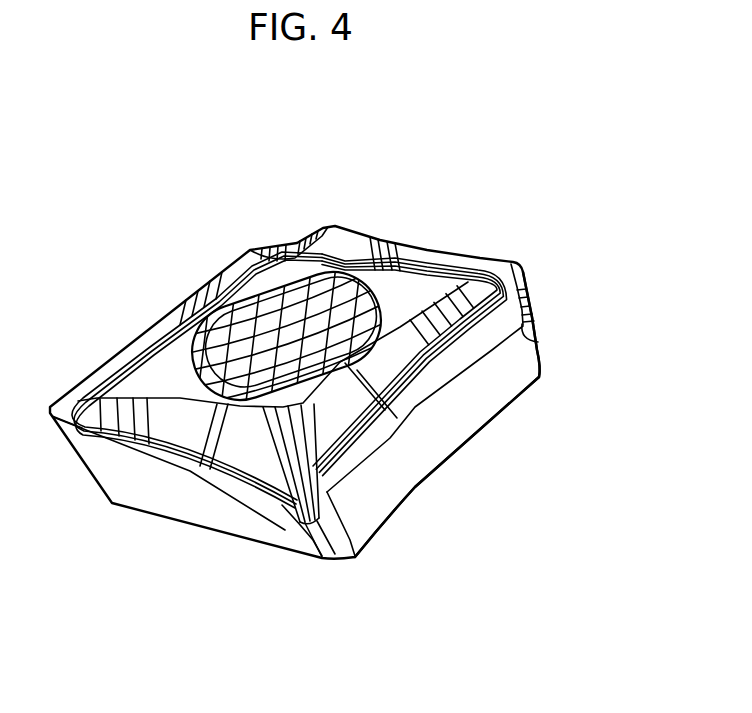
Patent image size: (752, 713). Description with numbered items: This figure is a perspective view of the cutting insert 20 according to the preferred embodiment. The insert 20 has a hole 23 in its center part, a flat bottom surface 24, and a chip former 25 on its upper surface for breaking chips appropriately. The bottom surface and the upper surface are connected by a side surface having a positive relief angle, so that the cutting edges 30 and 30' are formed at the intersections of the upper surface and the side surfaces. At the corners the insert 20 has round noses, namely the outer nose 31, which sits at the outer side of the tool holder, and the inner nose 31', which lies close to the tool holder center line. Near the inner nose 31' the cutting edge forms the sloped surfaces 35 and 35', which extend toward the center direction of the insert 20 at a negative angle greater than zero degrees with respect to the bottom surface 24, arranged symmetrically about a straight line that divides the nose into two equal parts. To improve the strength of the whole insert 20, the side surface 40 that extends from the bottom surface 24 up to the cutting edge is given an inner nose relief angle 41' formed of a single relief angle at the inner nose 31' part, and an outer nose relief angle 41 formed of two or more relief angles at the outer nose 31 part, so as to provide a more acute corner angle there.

The cutting insert 20 is at (131, 296).
The clamping hole 23 is at (263, 320).
The bottom surface 24 is at (534, 377).
The chip former 25 is at (380, 377).
The cutting edge 30 is at (437, 409).
The cutting edge 30' is at (410, 327).
The outer nose 31 is at (557, 281).
The inner nose 31' is at (291, 523).
The sloped surface 35 is at (378, 548).
The sloped surface 35' is at (252, 544).
The side surface 40 is at (423, 450).
The outer nose relief angle 41 is at (564, 341).
The inner nose relief angle 41' is at (372, 588).